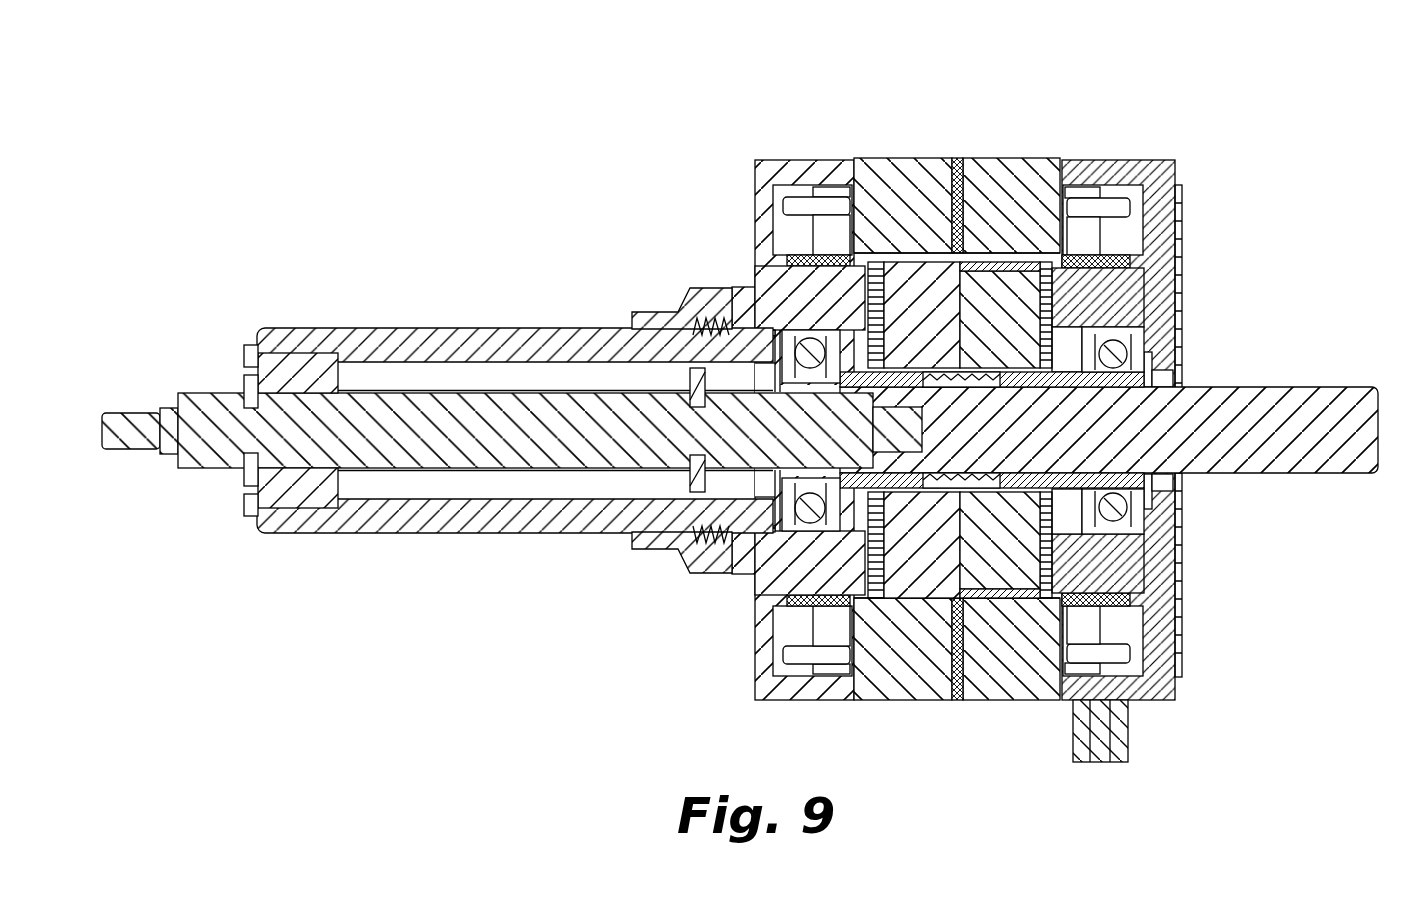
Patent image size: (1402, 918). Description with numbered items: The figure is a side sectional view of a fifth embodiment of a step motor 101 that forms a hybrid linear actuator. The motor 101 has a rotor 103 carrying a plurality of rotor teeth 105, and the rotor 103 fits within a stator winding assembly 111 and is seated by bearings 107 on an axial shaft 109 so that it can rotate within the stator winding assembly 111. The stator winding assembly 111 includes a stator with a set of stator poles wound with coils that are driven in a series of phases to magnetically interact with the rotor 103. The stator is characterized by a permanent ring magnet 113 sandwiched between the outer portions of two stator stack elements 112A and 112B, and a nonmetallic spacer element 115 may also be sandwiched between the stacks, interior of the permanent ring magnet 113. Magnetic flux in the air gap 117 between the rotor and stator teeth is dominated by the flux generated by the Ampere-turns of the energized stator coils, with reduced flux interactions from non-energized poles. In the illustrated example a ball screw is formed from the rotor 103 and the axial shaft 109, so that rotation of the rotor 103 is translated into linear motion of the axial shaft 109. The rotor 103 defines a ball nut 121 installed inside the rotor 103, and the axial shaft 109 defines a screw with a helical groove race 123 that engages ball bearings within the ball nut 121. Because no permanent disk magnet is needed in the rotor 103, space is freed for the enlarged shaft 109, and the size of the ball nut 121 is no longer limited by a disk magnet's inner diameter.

The step motor 101 is at (655, 238).
The rotor 103 is at (920, 200).
The rotor teeth 105 is at (900, 262).
The bearings 107 is at (790, 340).
The axial shaft 109 is at (1322, 400).
The stator winding assembly 111 is at (868, 700).
The stator stack element 112A is at (862, 158).
The stator stack element 112B is at (1052, 158).
The permanent ring magnet 113 is at (956, 158).
The nonmetallic spacer element 115 is at (950, 168).
The air gap 117 is at (1020, 605).
The ball nut 121 is at (1062, 388).
The helical groove race 123 is at (975, 388).